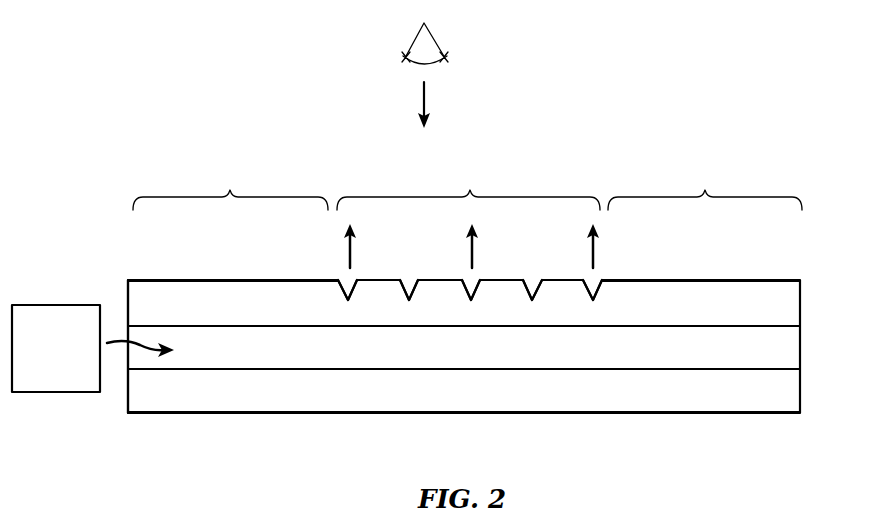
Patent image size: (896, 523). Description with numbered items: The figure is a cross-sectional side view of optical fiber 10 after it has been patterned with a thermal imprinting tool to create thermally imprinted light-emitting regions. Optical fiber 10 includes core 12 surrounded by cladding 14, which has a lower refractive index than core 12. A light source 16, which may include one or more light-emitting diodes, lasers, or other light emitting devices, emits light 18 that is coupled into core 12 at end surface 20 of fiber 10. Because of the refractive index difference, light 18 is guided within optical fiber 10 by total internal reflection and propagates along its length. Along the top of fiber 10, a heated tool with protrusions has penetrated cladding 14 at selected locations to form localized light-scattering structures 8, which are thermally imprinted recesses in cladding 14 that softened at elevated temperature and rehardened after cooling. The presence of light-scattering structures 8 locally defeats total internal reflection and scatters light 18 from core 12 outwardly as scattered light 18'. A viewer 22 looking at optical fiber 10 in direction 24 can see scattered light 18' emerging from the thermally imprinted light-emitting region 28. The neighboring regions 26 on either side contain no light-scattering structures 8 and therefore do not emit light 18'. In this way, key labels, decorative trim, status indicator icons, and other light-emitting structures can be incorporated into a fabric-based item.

The light-scattering structures 8 is at (403, 288).
The optical fiber 10 is at (838, 280).
The core 12 is at (742, 350).
The cladding 14 is at (705, 296).
The light source 16 is at (55, 393).
The light 18 is at (127, 298).
The scattered light 18' is at (500, 246).
The end surface 20 is at (126, 357).
The viewer 22 is at (436, 38).
The direction 24 is at (426, 95).
The regions 26 is at (467, 190).
The region 28 is at (468, 190).